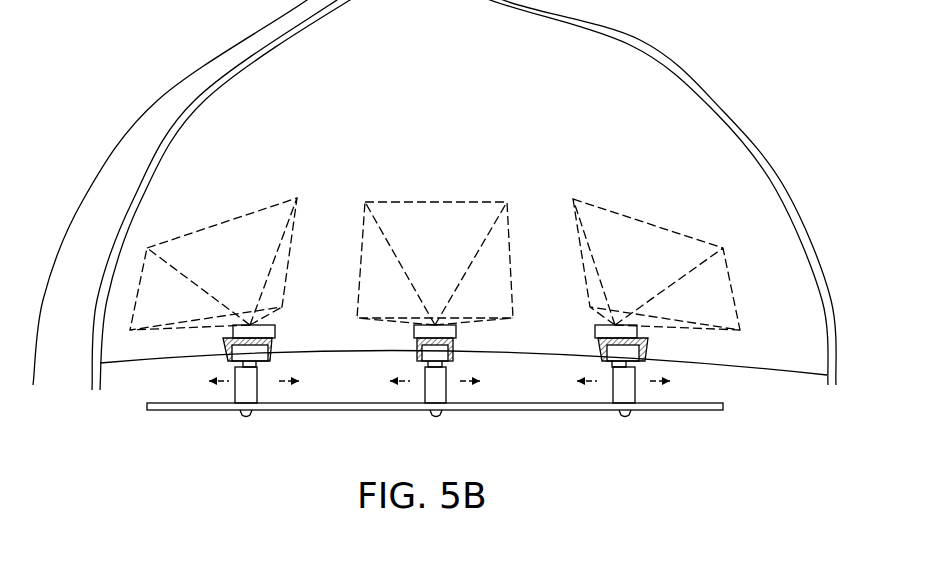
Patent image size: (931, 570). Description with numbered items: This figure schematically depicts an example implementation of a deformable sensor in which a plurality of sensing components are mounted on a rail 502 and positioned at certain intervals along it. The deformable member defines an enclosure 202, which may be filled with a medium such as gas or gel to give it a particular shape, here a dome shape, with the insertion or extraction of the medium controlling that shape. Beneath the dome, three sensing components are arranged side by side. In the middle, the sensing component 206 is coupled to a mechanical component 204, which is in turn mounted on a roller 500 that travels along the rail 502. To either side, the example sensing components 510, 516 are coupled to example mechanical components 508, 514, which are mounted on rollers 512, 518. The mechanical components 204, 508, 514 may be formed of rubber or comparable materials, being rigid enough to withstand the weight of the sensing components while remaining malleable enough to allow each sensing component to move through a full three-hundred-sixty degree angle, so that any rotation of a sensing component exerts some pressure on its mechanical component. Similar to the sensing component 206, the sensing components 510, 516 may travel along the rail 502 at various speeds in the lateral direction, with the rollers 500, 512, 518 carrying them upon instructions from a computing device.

The enclosure 202 is at (203, 68).
The mechanical component 204 is at (427, 392).
The sensing component 206 is at (455, 333).
The roller 500 is at (437, 412).
The rail 502 is at (718, 411).
The mechanical component 508 is at (636, 391).
The sensing component 510 is at (648, 352).
The roller 512 is at (627, 407).
The mechanical component 514 is at (235, 392).
The sensing component 516 is at (270, 352).
The roller 518 is at (246, 412).